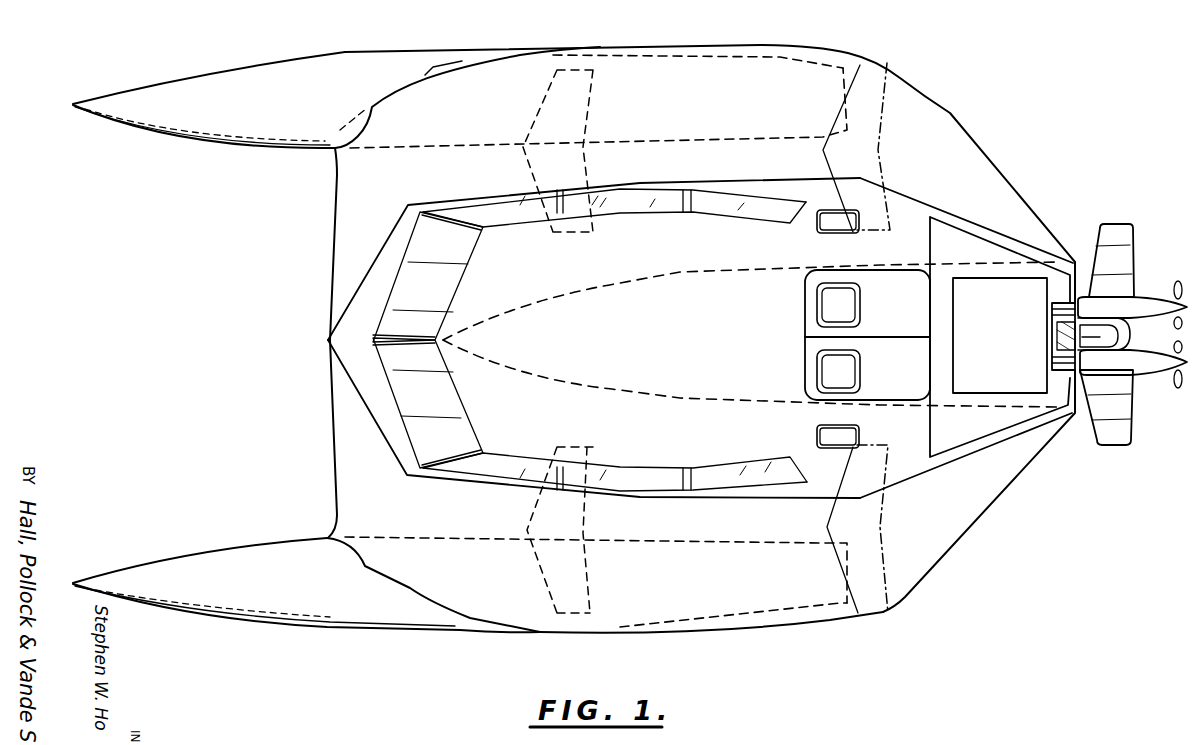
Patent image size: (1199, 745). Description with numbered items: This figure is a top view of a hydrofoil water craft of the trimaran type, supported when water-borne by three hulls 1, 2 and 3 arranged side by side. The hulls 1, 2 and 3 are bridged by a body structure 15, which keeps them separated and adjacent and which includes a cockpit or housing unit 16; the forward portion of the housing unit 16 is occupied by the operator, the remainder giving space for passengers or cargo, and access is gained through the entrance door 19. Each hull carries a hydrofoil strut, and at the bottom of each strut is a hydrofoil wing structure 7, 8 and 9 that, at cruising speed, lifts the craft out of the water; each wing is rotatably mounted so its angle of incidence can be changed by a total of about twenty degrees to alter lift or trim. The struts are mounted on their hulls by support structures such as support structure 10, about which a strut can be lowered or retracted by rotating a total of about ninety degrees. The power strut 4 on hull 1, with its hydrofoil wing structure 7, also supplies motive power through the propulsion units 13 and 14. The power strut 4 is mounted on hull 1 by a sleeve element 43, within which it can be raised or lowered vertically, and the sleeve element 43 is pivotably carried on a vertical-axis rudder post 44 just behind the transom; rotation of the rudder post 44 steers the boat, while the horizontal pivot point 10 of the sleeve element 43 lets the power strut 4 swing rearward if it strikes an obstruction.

The hull 1 is at (677, 387).
The hull 2 is at (172, 78).
The hull 3 is at (225, 566).
The power strut 4 is at (1087, 330).
The hydrofoil wing structure 7 is at (1113, 224).
The hydrofoil wing structure 8 is at (887, 63).
The hydrofoil wing structure 9 is at (890, 612).
The support structure (horizontal pivot point) 10 is at (1077, 363).
The propulsion unit 13 is at (1140, 302).
The propulsion unit 14 is at (1143, 366).
The body structure 15 is at (360, 212).
The cockpit or housing unit 16 is at (525, 440).
The entrance door 19 is at (880, 323).
The sleeve element 43 is at (1127, 332).
The rudder post 44 is at (1060, 333).